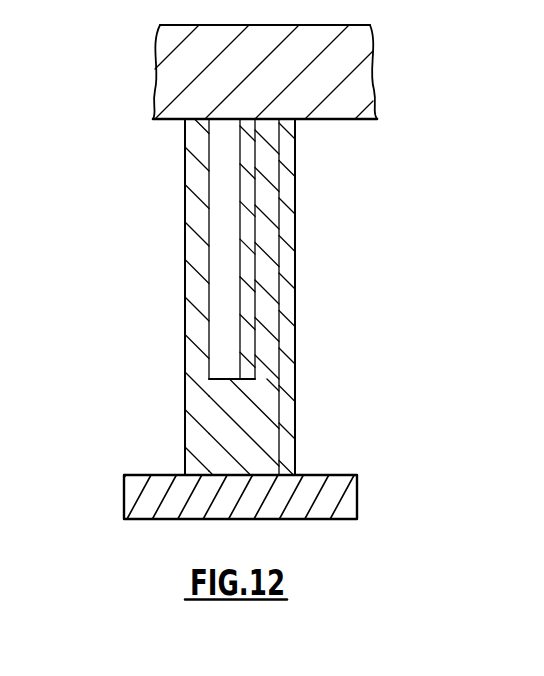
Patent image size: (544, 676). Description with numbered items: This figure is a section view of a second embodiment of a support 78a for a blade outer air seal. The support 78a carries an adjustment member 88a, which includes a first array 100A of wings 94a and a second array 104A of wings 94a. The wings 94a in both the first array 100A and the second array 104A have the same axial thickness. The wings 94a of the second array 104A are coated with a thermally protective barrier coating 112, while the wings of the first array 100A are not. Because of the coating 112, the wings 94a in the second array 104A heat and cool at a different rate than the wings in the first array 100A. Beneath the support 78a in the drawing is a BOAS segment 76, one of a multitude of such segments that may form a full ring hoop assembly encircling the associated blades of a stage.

The support 78a is at (452, 190).
The wings 94a is at (195, 218).
The first array 100A is at (185, 261).
The second array 104A is at (270, 180).
The adjustment member 88a is at (267, 290).
The thermally protective barrier coating 112 is at (296, 388).
The BOAS segment 76 is at (358, 495).